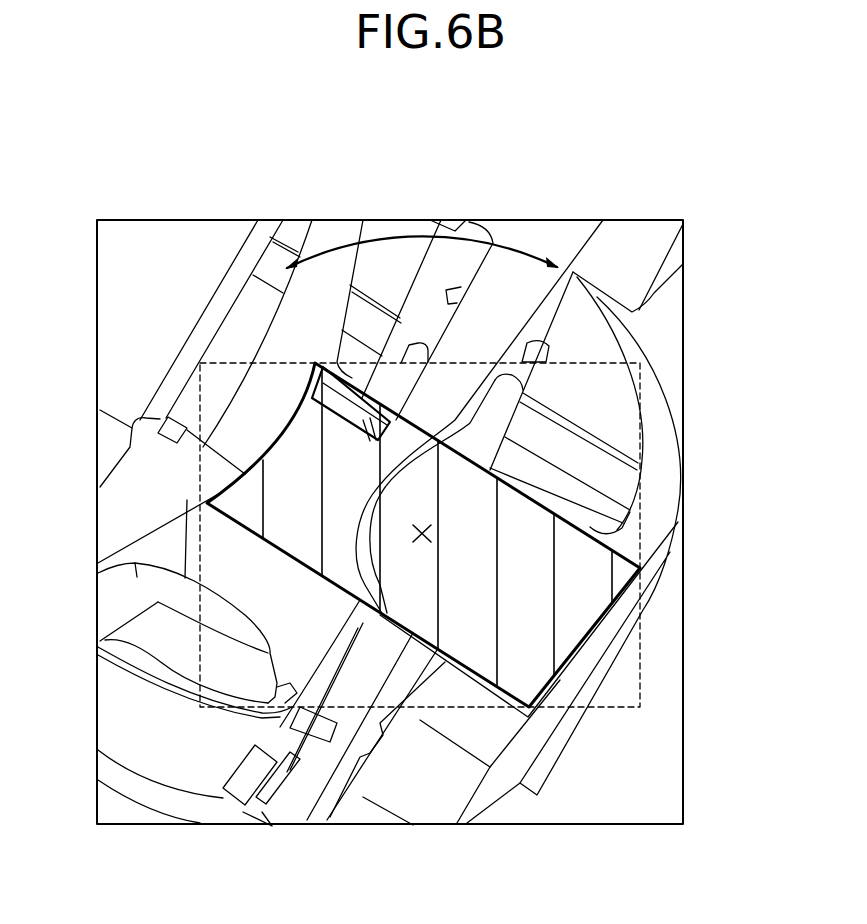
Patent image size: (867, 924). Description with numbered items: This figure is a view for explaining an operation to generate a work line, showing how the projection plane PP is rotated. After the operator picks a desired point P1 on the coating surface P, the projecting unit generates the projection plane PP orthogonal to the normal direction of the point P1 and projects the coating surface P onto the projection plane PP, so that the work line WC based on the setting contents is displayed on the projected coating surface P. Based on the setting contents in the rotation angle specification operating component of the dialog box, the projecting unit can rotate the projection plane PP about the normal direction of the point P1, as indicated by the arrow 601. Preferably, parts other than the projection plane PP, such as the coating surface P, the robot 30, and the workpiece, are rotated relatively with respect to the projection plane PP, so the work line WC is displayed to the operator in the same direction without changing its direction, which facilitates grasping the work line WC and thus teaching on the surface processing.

The robot 30 is at (591, 198).
The arrow 601 is at (398, 238).
The coating surface P is at (545, 675).
The point P1 is at (433, 533).
The projection plane PP is at (641, 660).
The work line WC is at (613, 580).